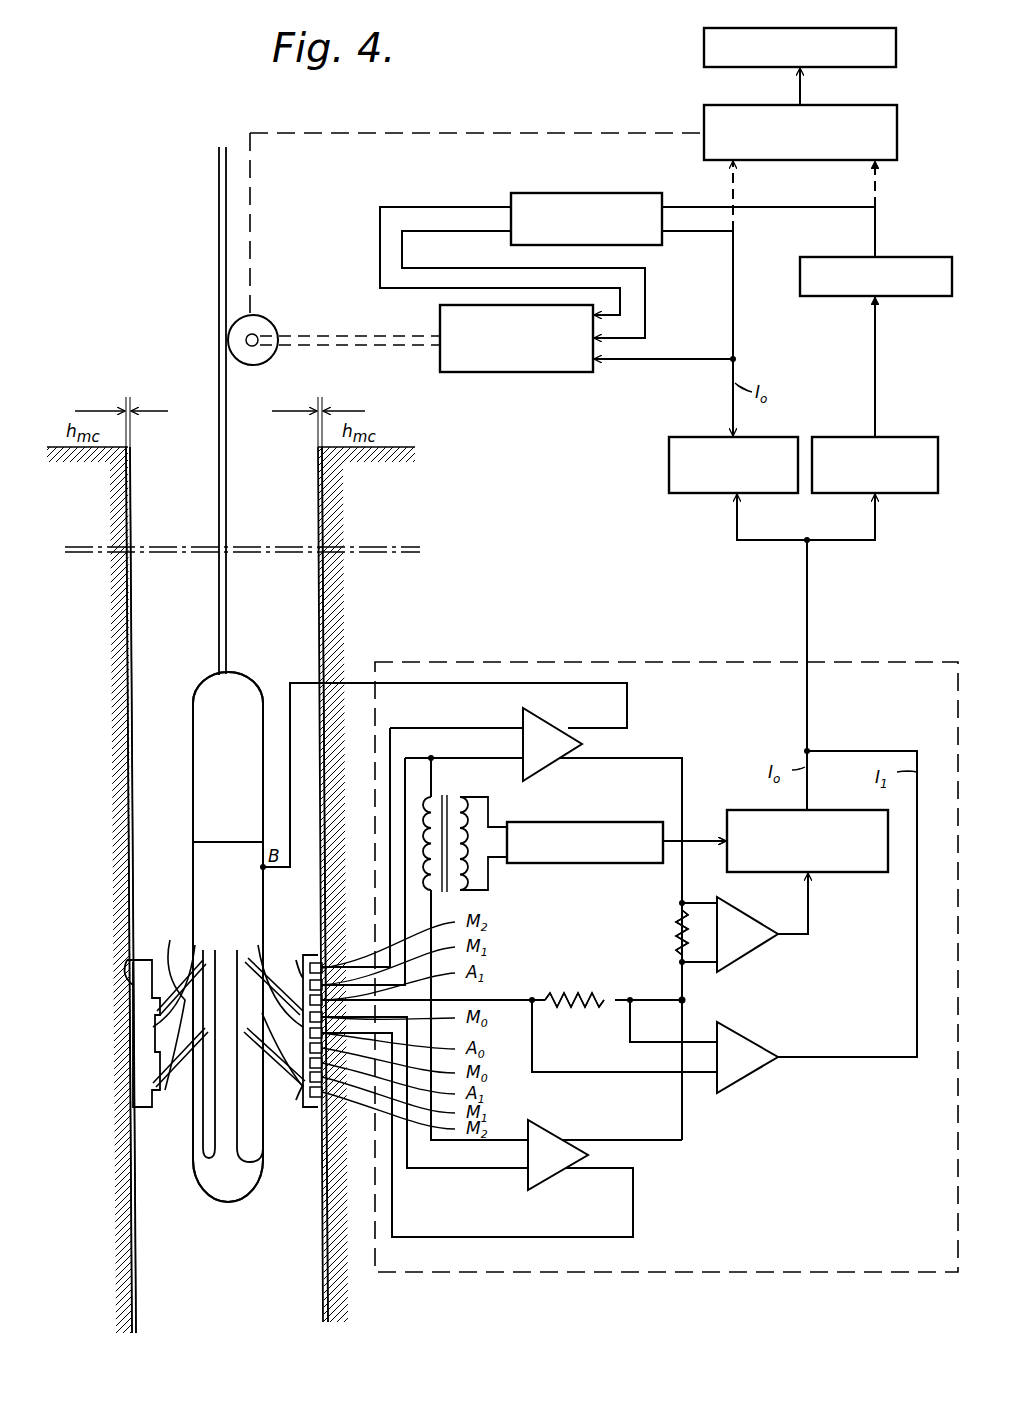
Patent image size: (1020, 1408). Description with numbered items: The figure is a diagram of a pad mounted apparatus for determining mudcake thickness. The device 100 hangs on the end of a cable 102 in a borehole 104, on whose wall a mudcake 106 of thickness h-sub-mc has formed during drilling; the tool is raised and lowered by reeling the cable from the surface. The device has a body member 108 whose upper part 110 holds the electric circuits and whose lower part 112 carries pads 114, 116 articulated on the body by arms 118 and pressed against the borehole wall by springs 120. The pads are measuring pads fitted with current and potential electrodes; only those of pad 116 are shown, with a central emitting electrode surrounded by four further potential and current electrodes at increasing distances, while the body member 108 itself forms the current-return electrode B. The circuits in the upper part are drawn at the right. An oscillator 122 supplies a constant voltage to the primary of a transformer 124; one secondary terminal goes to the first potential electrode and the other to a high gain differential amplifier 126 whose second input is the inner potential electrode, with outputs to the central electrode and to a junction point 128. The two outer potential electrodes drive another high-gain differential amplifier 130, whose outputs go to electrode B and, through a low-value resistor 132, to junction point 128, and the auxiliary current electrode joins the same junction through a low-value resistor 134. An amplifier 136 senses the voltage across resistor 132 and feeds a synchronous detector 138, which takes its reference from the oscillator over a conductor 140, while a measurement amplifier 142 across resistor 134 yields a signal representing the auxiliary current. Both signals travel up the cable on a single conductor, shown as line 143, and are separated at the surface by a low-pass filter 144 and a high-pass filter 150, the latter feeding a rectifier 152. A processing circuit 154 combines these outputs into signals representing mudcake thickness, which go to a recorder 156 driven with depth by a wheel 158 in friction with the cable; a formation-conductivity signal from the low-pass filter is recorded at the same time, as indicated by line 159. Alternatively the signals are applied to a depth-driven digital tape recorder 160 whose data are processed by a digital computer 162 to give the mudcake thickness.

The device 100 is at (193, 803).
The cable 102 is at (219, 604).
The borehole 104 is at (165, 752).
The mudcake 106 is at (322, 512).
The body member 108 is at (203, 889).
The upper part 110 is at (247, 682).
The lower part 112 is at (222, 1172).
The pad 114 is at (152, 1112).
The pad 116 is at (305, 1110).
The arms 118 is at (175, 960).
The springs 120 is at (292, 950).
The oscillator 122 is at (592, 865).
The transformer 124 is at (468, 782).
The high gain differential amplifier 126 is at (548, 1125).
The junction point 128 is at (690, 1003).
The high-gain differential amplifier 130 is at (545, 714).
The resistor 132 is at (680, 929).
The resistor 134 is at (573, 992).
The amplifier 136 is at (745, 920).
The synchronous detector 138 is at (850, 873).
The conductor 140 is at (694, 837).
The measurement amplifier 142 is at (765, 1043).
The signal lead 143 is at (807, 610).
The low-pass filter 144 is at (690, 496).
The high-pass filter 150 is at (912, 496).
The rectifier 152 is at (915, 257).
The processing circuit 154 is at (600, 193).
The recorder 156 is at (520, 372).
The wheel 158 is at (265, 320).
The line 159 is at (658, 362).
The digital tape recorder 160 is at (704, 113).
The digital computer 162 is at (704, 44).